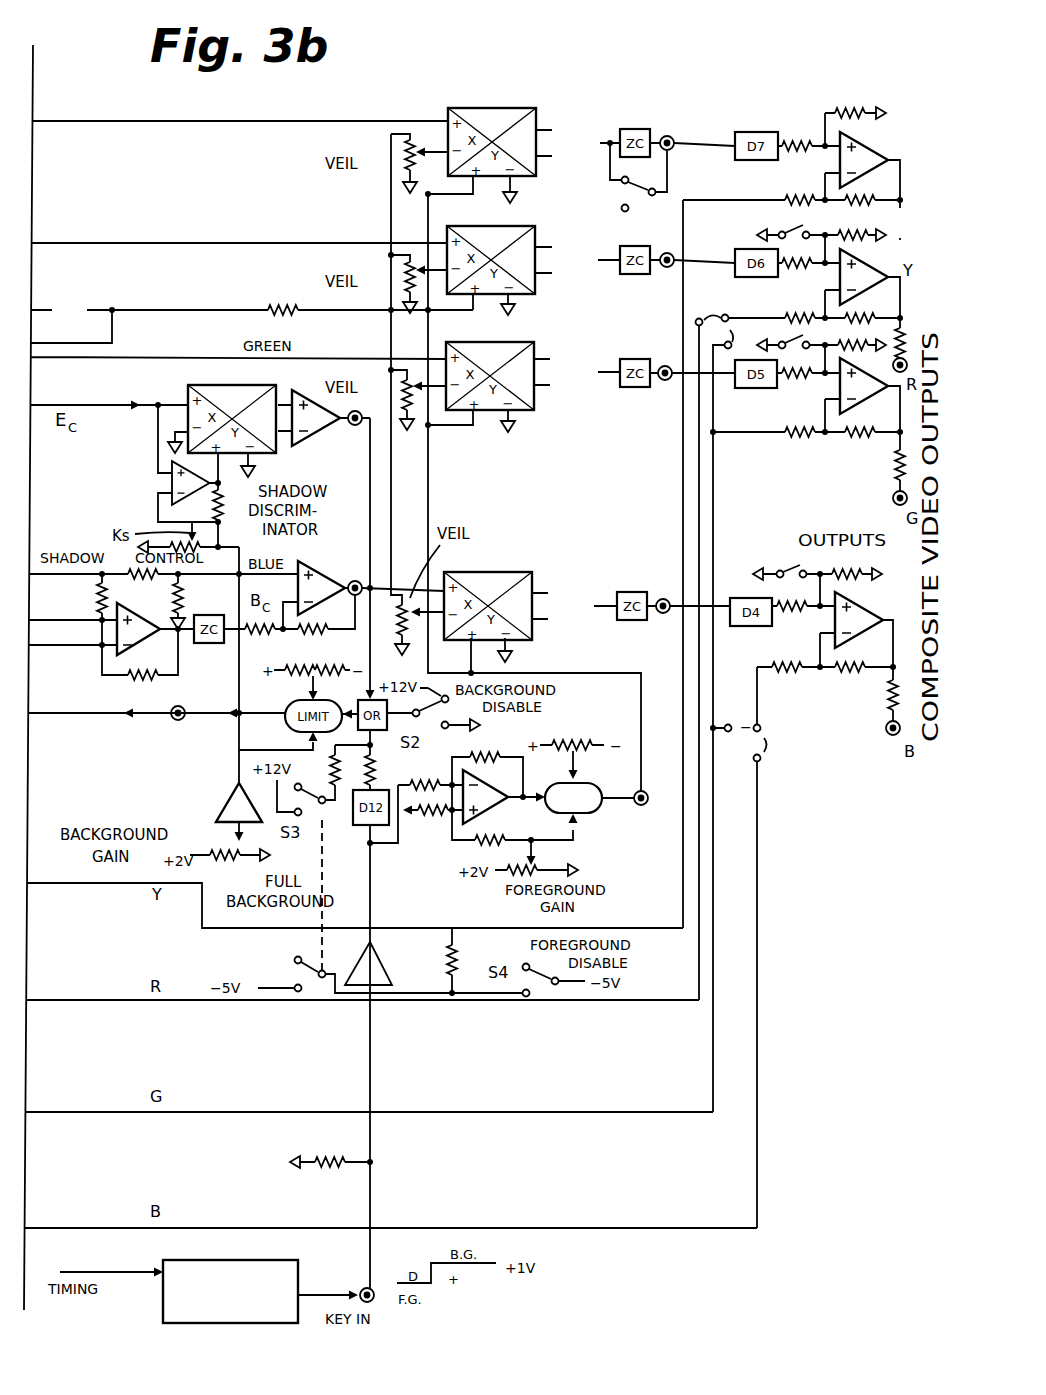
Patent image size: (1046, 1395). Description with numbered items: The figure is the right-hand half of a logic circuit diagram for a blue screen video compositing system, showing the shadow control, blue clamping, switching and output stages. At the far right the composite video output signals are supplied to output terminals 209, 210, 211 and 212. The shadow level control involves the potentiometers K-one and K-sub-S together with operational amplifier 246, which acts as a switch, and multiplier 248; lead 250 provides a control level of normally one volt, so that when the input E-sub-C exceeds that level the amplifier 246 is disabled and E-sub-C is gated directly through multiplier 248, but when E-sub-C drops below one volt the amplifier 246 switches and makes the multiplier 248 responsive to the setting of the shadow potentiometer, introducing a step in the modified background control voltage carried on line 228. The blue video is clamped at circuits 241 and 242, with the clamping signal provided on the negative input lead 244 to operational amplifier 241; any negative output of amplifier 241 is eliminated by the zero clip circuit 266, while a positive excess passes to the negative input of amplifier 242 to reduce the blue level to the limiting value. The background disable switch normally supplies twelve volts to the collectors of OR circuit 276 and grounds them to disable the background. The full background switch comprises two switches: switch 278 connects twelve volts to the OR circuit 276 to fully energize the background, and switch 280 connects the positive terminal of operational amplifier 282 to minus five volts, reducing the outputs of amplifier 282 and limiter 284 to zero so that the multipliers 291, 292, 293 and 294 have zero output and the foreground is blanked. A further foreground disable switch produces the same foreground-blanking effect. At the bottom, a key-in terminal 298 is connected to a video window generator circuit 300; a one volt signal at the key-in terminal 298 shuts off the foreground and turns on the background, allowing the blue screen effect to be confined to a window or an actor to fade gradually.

The output terminal 209 is at (903, 240).
The output terminal 210 is at (895, 377).
The output terminal 211 is at (886, 499).
The output terminal 212 is at (886, 735).
The line 228 is at (180, 721).
The operational amplifier 241 is at (125, 655).
The clamping circuit 242 is at (325, 572).
The negative input lead 244 is at (62, 645).
The operational amplifier 246 is at (172, 478).
The multiplier 248 is at (200, 385).
The lead 250 is at (168, 503).
The zero clip circuit 266 is at (210, 645).
The OR circuit 276 is at (379, 768).
The switch 278 is at (300, 805).
The switch 280 is at (308, 1012).
The operational amplifier 282 is at (500, 806).
The limiter 284 is at (593, 813).
The multiplier 291 is at (485, 108).
The multiplier 292 is at (500, 226).
The multiplier 293 is at (536, 405).
The multiplier 294 is at (515, 572).
The key-in terminal 298 is at (360, 1289).
The video window generator circuit 300 is at (213, 1323).